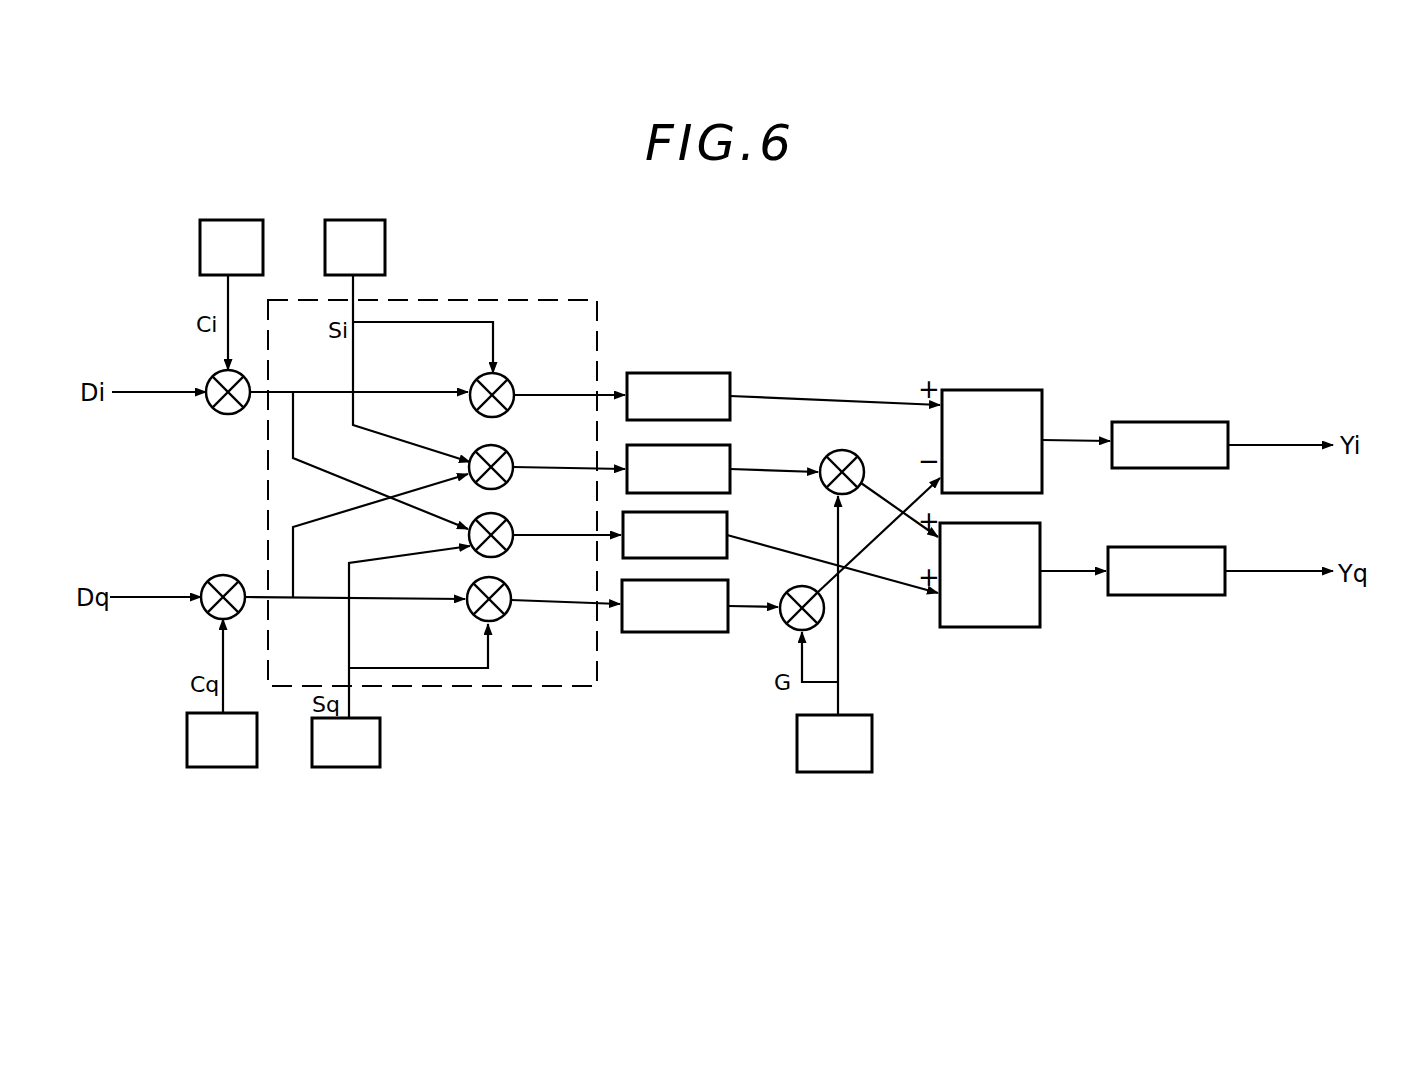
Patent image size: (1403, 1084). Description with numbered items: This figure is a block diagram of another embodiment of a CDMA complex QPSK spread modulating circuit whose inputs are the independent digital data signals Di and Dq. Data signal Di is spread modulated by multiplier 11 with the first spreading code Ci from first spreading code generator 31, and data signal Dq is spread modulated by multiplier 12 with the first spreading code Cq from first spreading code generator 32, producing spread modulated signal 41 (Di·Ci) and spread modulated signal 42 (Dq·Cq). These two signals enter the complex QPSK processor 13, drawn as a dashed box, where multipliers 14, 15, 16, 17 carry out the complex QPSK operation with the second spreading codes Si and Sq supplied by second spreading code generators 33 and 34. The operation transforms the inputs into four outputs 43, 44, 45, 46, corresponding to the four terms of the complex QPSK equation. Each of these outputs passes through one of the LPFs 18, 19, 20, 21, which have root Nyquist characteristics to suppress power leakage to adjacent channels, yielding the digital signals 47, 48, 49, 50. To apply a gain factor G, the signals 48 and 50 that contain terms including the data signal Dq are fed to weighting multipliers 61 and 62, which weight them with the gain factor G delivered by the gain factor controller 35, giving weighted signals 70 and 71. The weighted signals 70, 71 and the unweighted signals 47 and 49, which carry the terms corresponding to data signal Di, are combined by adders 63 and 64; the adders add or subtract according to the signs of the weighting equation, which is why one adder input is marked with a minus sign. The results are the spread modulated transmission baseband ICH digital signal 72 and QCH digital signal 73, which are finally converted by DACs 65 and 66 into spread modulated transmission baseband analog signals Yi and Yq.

The multiplier 11 is at (210, 410).
The multiplier 12 is at (208, 580).
The complex QPSK processor 13 is at (570, 300).
The multiplier 14 is at (507, 381).
The multiplier 15 is at (506, 453).
The multiplier 16 is at (506, 521).
The multiplier 17 is at (504, 585).
The LPF 18 is at (721, 373).
The LPF 19 is at (728, 455).
The LPF 20 is at (725, 522).
The LPF 21 is at (702, 632).
The first spreading code generator 31 is at (238, 220).
The first spreading code generator 32 is at (228, 767).
The second spreading code generator 33 is at (355, 220).
The second spreading code generator 34 is at (345, 767).
The gain factor controller 35 is at (838, 772).
The spread modulated signal 41 is at (294, 392).
The spread modulated signal 42 is at (282, 600).
The output 43 is at (572, 392).
The output 44 is at (572, 467).
The output 45 is at (572, 535).
The output 46 is at (572, 602).
The digital signal 47 is at (812, 400).
The digital signal 48 is at (790, 469).
The digital signal 49 is at (800, 556).
The digital signal 50 is at (746, 608).
The weighting multiplier 61 is at (857, 458).
The weighting multiplier 62 is at (786, 592).
The adder 63 is at (992, 390).
The adder 64 is at (992, 627).
The DAC 65 is at (1172, 422).
The DAC 66 is at (1168, 595).
The signal 70 is at (912, 500).
The signal 71 is at (912, 512).
The ICH digital signal 72 is at (1074, 440).
The QCH digital signal 73 is at (1074, 570).